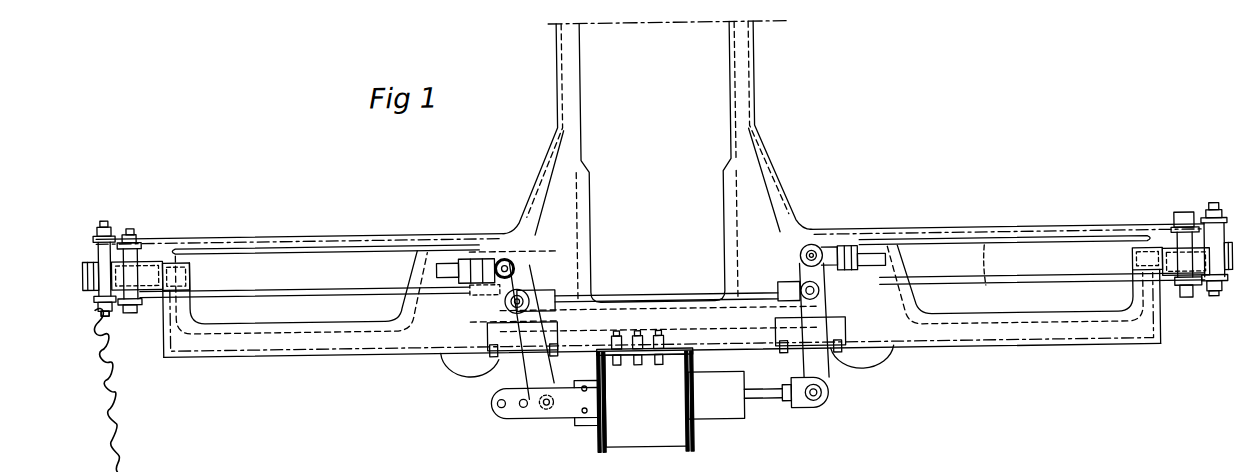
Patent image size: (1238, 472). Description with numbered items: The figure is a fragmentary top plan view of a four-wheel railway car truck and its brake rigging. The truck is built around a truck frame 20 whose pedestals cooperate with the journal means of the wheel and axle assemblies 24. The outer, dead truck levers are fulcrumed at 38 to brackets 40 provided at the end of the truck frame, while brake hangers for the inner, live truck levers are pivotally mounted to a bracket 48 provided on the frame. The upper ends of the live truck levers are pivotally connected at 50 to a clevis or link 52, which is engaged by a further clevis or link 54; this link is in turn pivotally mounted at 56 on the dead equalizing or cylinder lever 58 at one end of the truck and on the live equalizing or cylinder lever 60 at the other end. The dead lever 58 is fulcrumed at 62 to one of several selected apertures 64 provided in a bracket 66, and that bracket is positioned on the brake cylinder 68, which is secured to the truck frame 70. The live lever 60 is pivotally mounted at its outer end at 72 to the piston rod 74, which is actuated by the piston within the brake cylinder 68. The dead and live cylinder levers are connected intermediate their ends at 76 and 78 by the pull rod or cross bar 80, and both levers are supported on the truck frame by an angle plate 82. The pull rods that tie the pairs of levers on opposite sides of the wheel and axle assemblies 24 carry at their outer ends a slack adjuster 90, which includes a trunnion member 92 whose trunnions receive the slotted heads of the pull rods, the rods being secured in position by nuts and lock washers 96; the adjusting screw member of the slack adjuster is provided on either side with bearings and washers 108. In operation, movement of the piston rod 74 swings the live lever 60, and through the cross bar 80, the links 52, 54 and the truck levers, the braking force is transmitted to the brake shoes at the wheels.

The truck frame 20 is at (757, 152).
The wheel and axle assemblies 24 is at (329, 245).
The fulcrum 38 is at (985, 260).
The brackets 40 is at (1140, 265).
The bracket 48 is at (520, 229).
The pivotal connection 50 is at (872, 262).
The clevis or link 52 is at (842, 256).
The clevis or link 54 is at (830, 250).
The pivot 56 is at (813, 248).
The dead equalizing or cylinder lever 58 is at (528, 372).
The live equalizing or cylinder lever 60 is at (828, 372).
The fulcrum 62 is at (545, 405).
The apertures 64 is at (522, 405).
The bracket 66 is at (572, 405).
The brake cylinder 68 is at (643, 438).
The truck frame 70 is at (640, 335).
The pivot 72 is at (828, 399).
The piston rod 74 is at (768, 402).
The pivotal connection 76 is at (530, 298).
The pivotal connection 78 is at (800, 291).
The pull rod or cross bar 80 is at (680, 294).
The angle plate 82 is at (487, 340).
The slack adjuster 90 is at (118, 244).
The trunnion member 92 is at (113, 293).
The nuts and lock washers 96 is at (104, 221).
The washers 108 is at (140, 228).